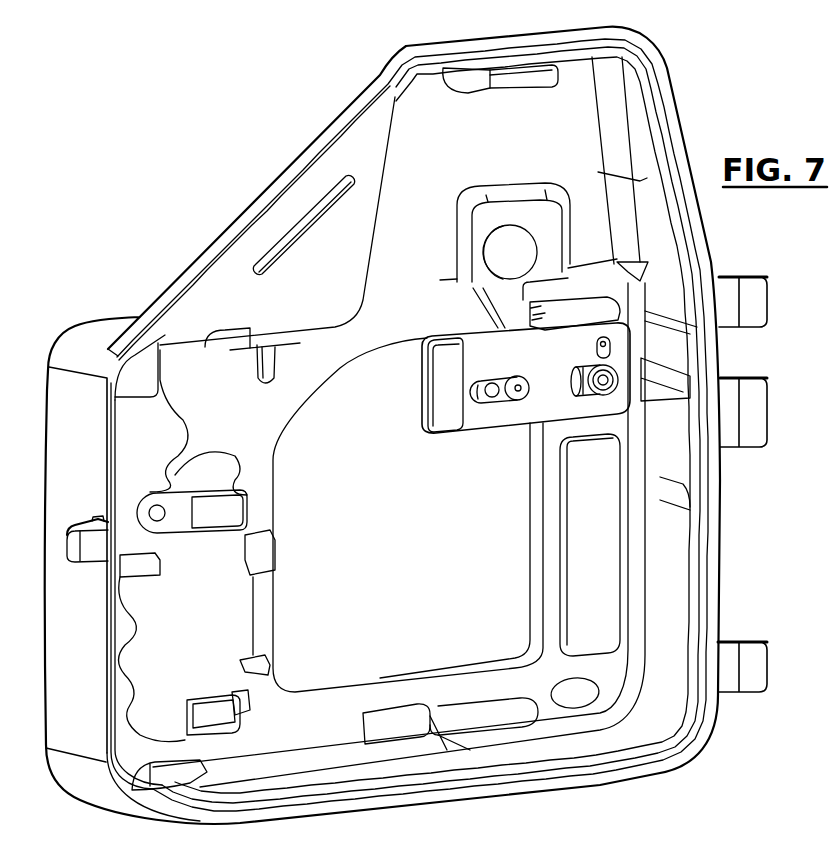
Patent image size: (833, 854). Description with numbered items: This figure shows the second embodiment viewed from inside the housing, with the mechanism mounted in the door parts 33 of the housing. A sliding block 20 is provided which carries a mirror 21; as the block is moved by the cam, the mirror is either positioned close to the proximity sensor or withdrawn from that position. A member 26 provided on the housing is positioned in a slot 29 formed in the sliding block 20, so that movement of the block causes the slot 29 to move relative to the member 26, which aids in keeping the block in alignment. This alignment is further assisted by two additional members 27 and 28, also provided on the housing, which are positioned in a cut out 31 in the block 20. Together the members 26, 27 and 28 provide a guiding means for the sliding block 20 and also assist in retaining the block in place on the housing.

The sliding block 20 is at (498, 422).
The mirror 21 is at (445, 405).
The member 26 is at (583, 393).
The member 27 is at (488, 383).
The member 28 is at (517, 380).
The slot 29 is at (588, 397).
The cut out 31 is at (470, 389).
The door parts 33 is at (408, 515).